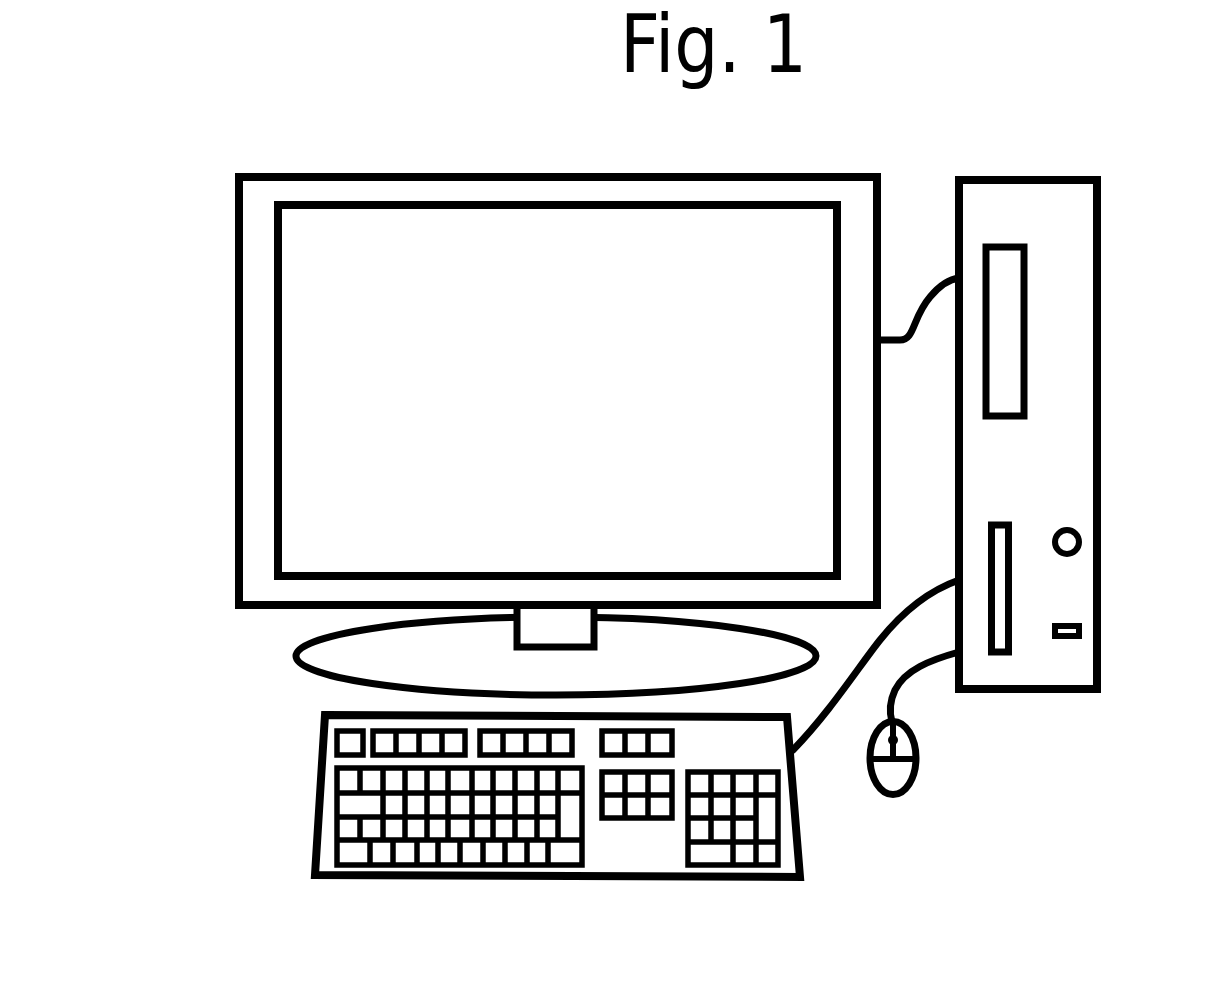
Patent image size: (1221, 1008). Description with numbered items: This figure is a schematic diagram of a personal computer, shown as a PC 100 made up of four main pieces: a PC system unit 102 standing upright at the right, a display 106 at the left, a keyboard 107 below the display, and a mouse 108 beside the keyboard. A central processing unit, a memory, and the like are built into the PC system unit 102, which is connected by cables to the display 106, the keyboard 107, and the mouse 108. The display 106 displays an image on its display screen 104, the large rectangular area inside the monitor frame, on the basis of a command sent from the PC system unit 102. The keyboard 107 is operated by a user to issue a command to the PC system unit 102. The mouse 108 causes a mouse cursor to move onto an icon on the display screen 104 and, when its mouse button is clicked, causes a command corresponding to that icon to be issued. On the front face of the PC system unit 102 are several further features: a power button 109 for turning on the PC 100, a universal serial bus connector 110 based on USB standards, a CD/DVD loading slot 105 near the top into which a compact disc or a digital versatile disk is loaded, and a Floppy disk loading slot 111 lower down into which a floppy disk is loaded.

The PC 100 is at (1196, 164).
The PC system unit 102 is at (1077, 184).
The display screen 104 is at (316, 555).
The CD/DVD loading slot 105 is at (1015, 320).
The display 106 is at (414, 177).
The keyboard 107 is at (326, 762).
The mouse 108 is at (870, 776).
The power button 109 is at (1081, 542).
The universal serial bus (USB) connector 110 is at (1081, 630).
The Floppy disk (FD) loading slot 111 is at (1004, 526).